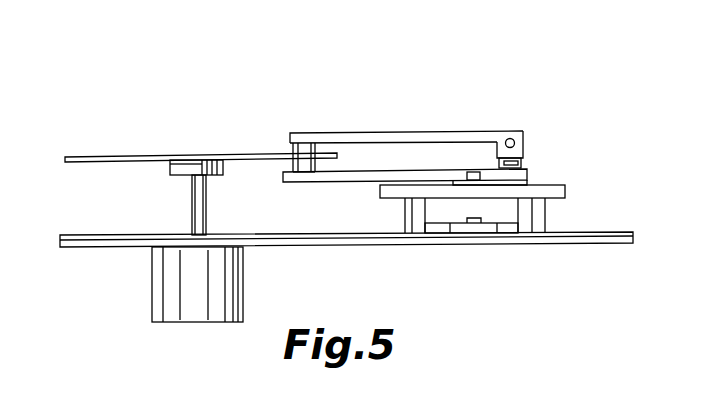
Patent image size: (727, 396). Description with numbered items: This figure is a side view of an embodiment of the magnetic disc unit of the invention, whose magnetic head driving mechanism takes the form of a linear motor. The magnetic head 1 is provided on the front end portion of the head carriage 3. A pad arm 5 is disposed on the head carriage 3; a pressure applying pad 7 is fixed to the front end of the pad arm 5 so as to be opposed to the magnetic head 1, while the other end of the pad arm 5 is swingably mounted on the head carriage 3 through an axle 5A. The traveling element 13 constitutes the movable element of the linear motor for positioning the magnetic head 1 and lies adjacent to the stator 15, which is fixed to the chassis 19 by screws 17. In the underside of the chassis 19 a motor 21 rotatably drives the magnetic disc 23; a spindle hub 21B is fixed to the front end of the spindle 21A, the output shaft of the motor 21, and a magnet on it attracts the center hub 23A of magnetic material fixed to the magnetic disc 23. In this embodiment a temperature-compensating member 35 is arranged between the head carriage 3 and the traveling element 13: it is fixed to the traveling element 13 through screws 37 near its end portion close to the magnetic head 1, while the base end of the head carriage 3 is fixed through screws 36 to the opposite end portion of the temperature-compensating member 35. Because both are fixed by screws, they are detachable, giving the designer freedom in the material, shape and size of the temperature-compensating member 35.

The magnetic head 1 is at (302, 165).
The head carriage 3 is at (333, 175).
The pad arm 5 is at (407, 133).
The axle 5A is at (510, 138).
The pressure applying pad 7 is at (303, 145).
The traveling element 13 is at (543, 190).
The stator 15 is at (532, 222).
The screws 17 is at (477, 240).
The chassis 19 is at (593, 235).
The motor 21 is at (232, 288).
The spindle 21A is at (193, 189).
The spindle hub 21B is at (215, 158).
The magnetic disc 23 is at (80, 157).
The center hub 23A is at (183, 159).
The temperature-compensating member 35 is at (535, 183).
The screws 36 is at (523, 157).
The screws 37 is at (473, 172).